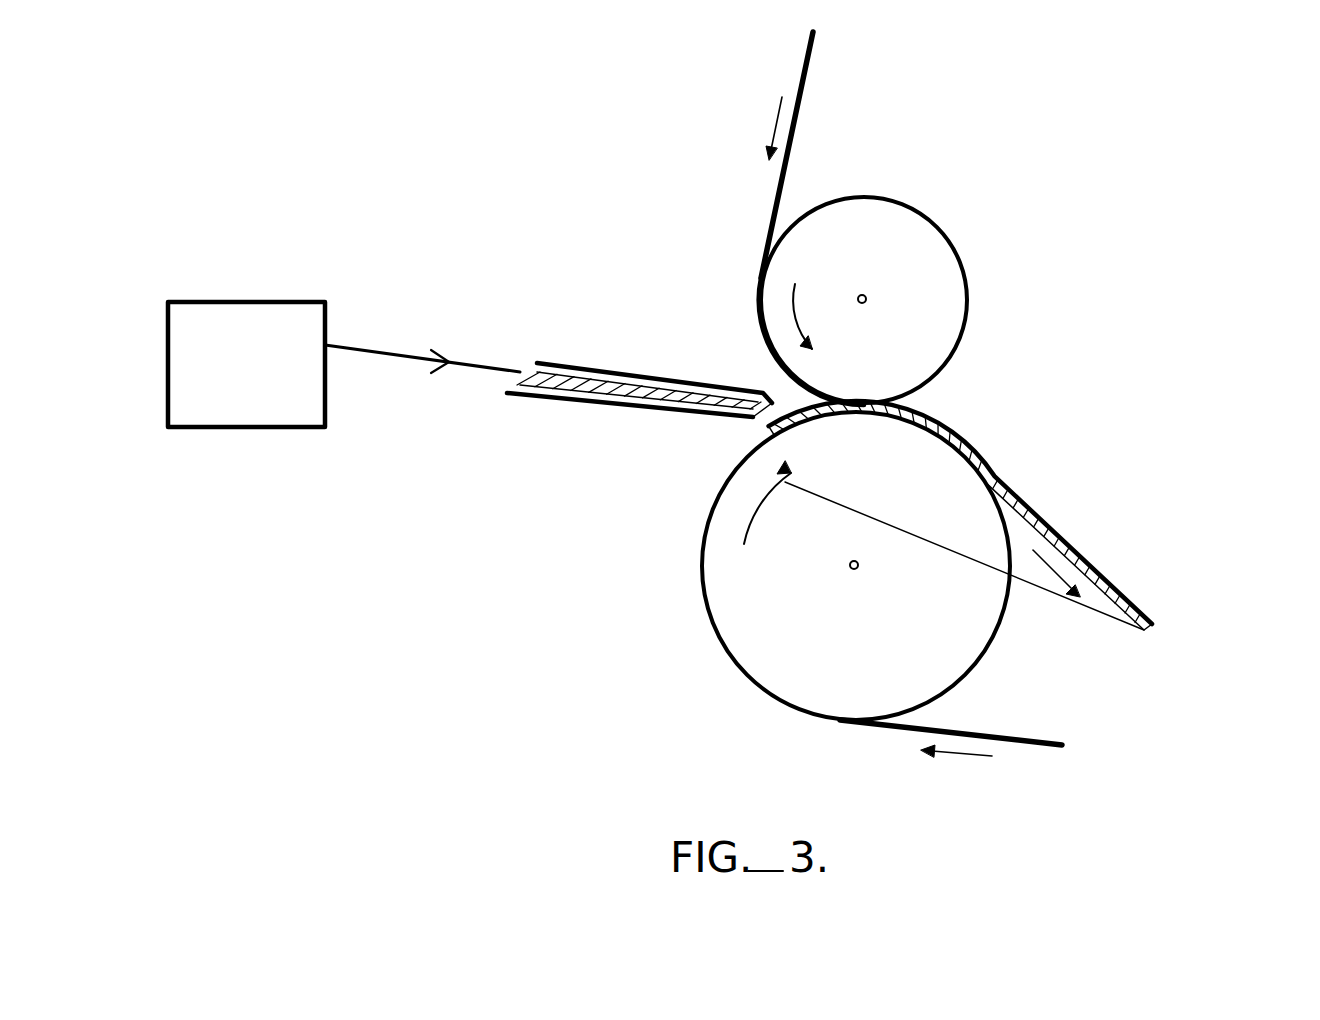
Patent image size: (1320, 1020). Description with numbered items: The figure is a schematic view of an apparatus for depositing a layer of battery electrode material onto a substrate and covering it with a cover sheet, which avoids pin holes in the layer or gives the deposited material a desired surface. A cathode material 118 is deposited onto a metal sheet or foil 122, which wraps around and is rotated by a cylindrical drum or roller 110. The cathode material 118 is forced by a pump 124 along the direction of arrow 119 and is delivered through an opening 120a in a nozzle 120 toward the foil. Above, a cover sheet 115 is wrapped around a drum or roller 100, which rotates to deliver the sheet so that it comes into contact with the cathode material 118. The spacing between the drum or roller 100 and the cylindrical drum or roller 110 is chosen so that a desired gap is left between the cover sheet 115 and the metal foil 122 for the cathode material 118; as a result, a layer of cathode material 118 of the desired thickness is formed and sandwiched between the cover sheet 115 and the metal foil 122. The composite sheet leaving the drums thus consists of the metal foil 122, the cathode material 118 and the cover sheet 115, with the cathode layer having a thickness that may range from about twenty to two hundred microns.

The drum or roller 100 is at (905, 262).
The cylindrical drum or roller 110 is at (916, 529).
The cover sheet 115 is at (810, 60).
The cathode material 118 is at (602, 398).
The arrow 119 is at (470, 369).
The nozzle 120 is at (635, 372).
The opening 120a is at (752, 419).
The metal sheet or foil 122 is at (888, 728).
The pump 124 is at (311, 302).